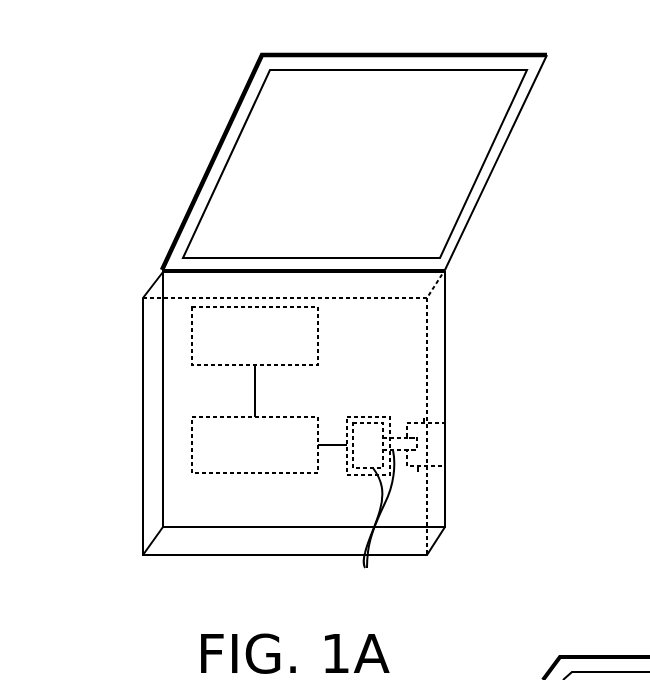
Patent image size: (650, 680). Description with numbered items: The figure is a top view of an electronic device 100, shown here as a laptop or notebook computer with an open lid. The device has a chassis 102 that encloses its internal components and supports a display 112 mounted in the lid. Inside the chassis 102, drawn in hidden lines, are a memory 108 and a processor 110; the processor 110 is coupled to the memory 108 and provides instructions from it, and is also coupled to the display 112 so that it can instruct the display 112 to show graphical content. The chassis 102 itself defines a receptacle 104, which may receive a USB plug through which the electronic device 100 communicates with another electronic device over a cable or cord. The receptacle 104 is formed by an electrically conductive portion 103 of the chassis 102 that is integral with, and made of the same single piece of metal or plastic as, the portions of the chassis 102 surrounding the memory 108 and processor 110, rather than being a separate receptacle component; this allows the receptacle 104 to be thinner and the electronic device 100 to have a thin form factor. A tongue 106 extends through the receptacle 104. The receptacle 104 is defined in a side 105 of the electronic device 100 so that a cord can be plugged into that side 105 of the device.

The electronic device 100 is at (146, 181).
The chassis 102 is at (143, 470).
The electrically conductive portion 103 is at (478, 503).
The receptacle 104 is at (442, 452).
The side 105 is at (446, 288).
The tongue 106 is at (366, 537).
The memory 108 is at (236, 358).
The processor 110 is at (236, 469).
The display 112 is at (334, 175).